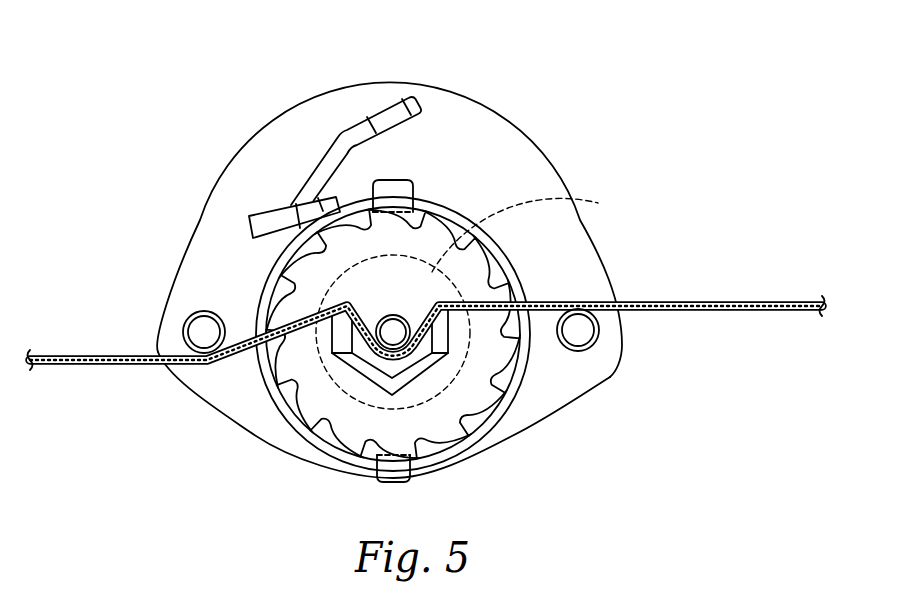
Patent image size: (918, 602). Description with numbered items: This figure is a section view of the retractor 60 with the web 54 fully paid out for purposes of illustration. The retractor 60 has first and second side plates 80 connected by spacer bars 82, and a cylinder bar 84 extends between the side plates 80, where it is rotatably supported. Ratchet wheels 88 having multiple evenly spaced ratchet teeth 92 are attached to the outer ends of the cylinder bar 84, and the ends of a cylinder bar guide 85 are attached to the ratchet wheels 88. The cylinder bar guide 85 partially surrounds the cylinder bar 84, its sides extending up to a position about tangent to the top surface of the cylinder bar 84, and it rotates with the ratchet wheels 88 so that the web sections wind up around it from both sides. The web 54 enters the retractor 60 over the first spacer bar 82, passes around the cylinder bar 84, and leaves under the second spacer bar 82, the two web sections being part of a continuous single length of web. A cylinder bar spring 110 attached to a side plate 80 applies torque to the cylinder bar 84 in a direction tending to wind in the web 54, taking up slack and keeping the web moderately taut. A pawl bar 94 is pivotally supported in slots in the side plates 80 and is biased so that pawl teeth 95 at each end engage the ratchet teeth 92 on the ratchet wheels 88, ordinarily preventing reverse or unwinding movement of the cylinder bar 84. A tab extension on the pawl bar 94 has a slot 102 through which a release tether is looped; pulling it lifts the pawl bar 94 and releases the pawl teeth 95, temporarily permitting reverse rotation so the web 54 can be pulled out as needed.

The web 54 is at (102, 364).
The retractor 60 is at (566, 145).
The side plates 80 is at (562, 392).
The spacer bars 82 is at (190, 336).
The cylinder bar 84 is at (388, 333).
The cylinder bar guide 85 is at (371, 380).
The ratchet wheels 88 is at (435, 418).
The ratchet teeth 92 is at (437, 417).
The pawl bar 94 is at (328, 163).
The pawl teeth 95 is at (308, 197).
The slot 102 is at (384, 104).
The cylinder bar spring 110 is at (479, 299).